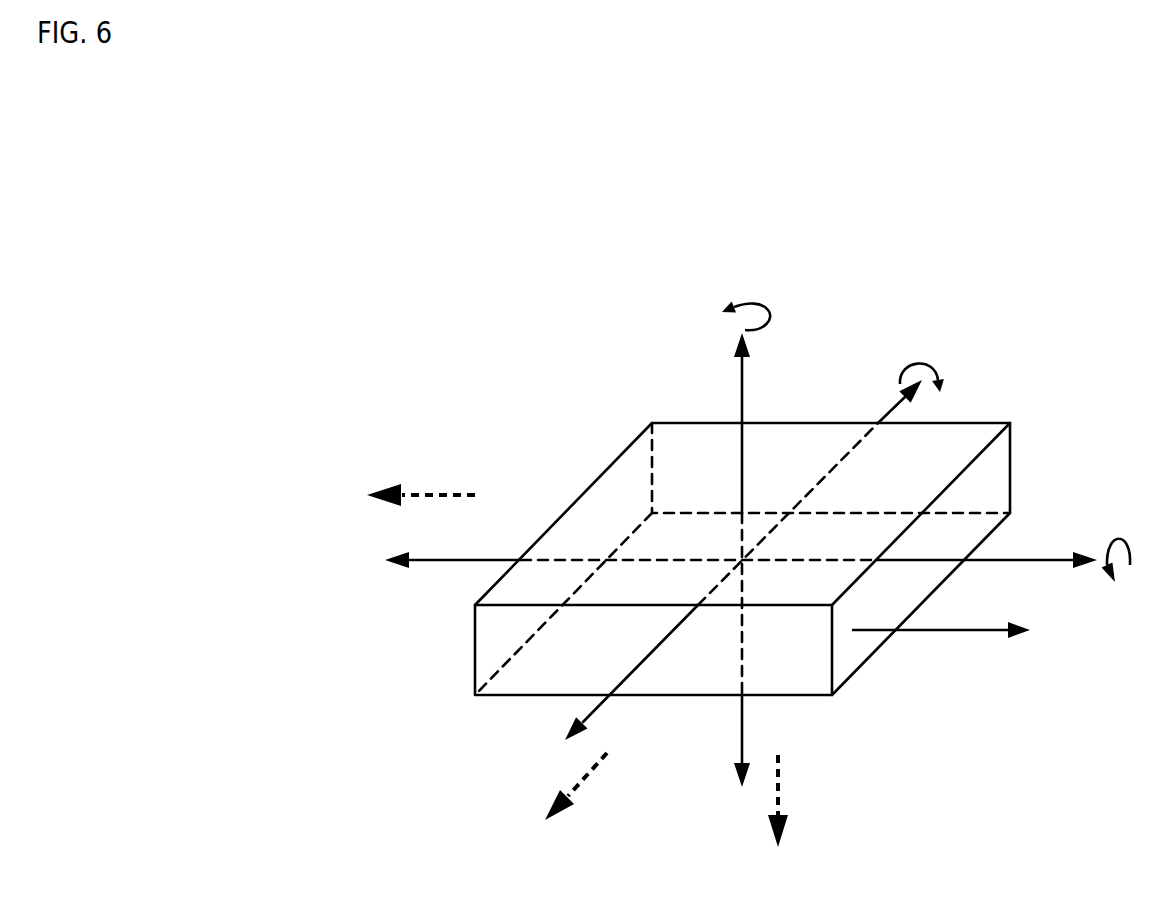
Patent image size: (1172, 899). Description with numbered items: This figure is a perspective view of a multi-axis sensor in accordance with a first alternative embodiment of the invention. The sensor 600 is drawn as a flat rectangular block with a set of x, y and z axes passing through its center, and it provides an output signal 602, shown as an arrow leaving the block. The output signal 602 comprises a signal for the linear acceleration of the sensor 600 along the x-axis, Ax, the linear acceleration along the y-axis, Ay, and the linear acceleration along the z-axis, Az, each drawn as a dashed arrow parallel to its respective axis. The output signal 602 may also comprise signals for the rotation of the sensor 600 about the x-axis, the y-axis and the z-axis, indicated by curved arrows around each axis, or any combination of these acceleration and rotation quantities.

The sensor 600 is at (743, 541).
The output signal 602 is at (975, 630).
The linear acceleration along the x-axis Ax is at (405, 477).
The linear acceleration along the y-axis Ay is at (562, 797).
The linear acceleration along the z-axis Az is at (795, 808).